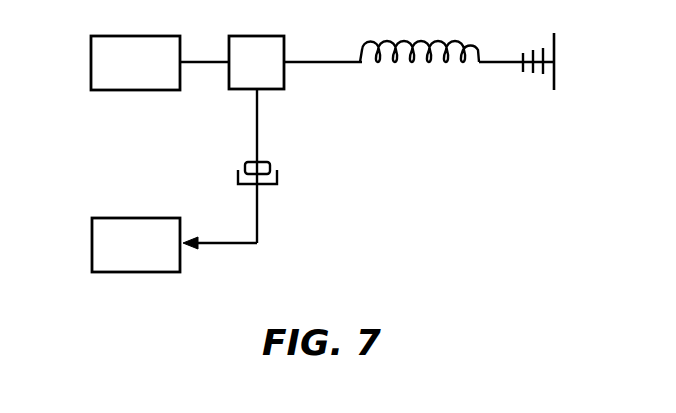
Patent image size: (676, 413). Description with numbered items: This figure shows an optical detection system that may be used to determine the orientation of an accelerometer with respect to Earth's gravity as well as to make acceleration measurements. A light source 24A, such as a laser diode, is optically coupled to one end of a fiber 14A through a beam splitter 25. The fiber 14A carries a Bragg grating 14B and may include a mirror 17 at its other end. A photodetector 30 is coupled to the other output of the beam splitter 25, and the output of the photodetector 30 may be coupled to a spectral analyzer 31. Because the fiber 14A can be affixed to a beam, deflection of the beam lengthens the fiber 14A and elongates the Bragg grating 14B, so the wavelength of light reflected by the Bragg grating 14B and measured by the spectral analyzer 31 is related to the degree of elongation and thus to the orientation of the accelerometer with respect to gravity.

The light source 24A is at (112, 36).
The beam splitter 25 is at (248, 36).
The fiber 14A is at (421, 40).
The Bragg grating 14B is at (532, 44).
The mirror 17 is at (556, 62).
The photodetector 30 is at (254, 162).
The spectral analyzer 31 is at (113, 218).